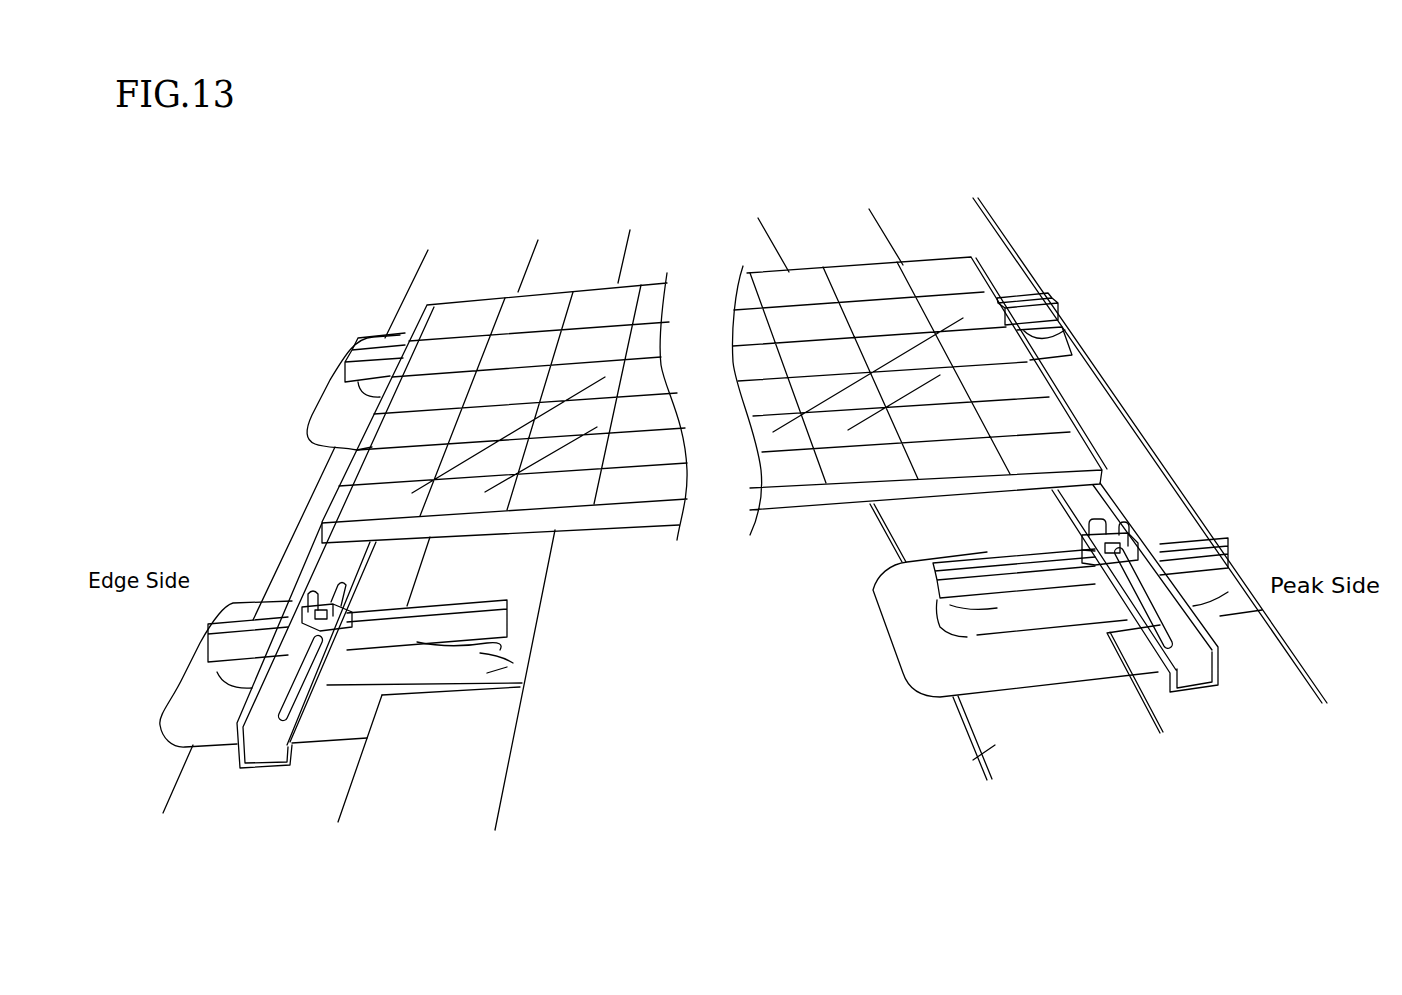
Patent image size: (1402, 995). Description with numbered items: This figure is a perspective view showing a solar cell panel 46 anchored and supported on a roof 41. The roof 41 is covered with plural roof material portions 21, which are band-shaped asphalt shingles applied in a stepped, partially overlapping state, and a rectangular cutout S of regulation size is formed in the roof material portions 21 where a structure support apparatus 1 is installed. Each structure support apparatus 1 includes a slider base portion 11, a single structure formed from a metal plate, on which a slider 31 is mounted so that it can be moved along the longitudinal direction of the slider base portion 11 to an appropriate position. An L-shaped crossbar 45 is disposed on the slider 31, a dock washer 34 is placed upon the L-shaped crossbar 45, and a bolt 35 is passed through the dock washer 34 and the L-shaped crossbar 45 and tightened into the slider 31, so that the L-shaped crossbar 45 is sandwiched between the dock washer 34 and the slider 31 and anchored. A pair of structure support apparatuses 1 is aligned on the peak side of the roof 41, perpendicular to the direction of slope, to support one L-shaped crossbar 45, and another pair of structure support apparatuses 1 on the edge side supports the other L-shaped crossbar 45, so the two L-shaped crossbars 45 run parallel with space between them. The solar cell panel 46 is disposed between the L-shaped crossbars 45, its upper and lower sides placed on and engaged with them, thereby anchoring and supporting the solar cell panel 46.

The structure support apparatus 1 is at (338, 405).
The slider base portion 11 is at (373, 372).
The roof material portions 21 is at (1160, 708).
The slider 31 is at (1088, 548).
The dock washer 34 is at (300, 606).
The bolt 35 is at (306, 600).
The roof 41 is at (936, 199).
The L-shaped crossbar 45 is at (277, 752).
The solar cell panel 46 is at (860, 278).
The rectangular cutout S is at (507, 670).